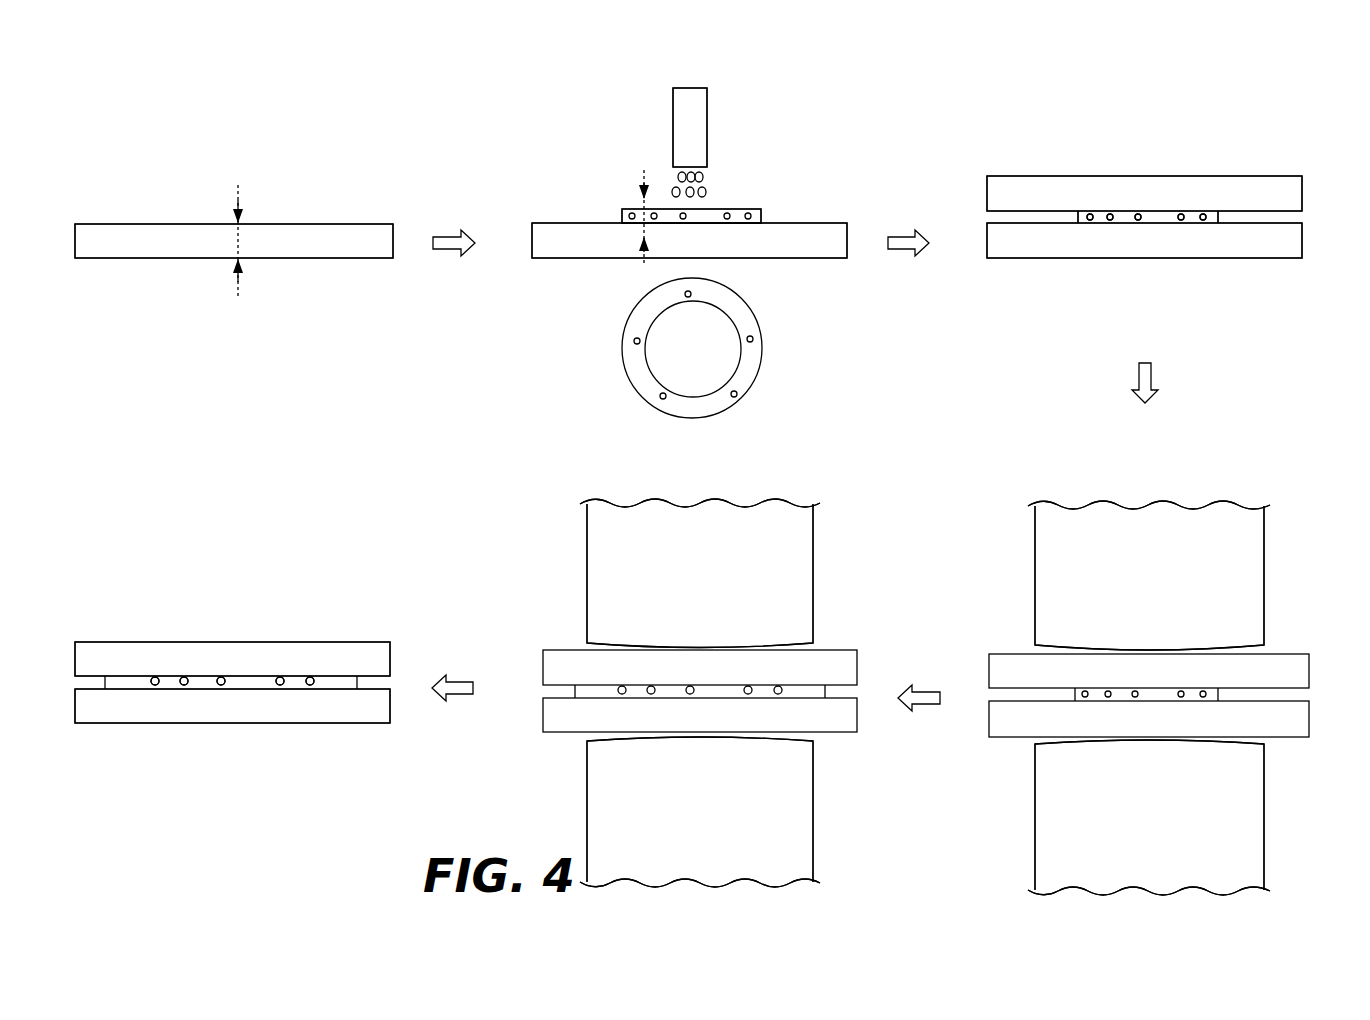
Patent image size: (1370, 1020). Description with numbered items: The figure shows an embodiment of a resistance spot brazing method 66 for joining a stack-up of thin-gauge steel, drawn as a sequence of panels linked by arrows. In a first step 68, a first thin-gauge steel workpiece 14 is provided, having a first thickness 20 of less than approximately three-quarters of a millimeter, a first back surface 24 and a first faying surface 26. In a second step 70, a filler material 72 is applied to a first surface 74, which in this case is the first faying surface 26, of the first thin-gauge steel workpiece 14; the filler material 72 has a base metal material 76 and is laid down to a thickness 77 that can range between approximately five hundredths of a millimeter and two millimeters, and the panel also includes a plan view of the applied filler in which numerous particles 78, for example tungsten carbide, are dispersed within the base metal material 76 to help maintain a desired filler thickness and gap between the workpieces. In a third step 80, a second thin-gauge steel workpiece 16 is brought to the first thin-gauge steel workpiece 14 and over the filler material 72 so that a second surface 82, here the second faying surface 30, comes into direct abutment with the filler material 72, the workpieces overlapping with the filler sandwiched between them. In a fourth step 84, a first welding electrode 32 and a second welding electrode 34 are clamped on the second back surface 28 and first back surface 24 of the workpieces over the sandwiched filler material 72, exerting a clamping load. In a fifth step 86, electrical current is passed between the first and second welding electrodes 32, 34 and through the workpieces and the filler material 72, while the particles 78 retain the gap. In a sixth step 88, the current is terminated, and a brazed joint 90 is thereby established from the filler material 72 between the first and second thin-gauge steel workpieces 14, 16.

The first thin-gauge steel workpiece 14 is at (167, 240).
The second thin-gauge steel workpiece 16 is at (1020, 192).
The first thickness 20 is at (240, 240).
The first back surface 24 is at (1012, 739).
The first faying surface 26 is at (689, 142).
The second back surface 28 is at (1012, 652).
The second faying surface 30 is at (1223, 212).
The first welding electrode 32 is at (1264, 571).
The second welding electrode 34 is at (1264, 813).
The resistance spot brazing method 66 is at (1214, 78).
The first step 68 is at (356, 198).
The second step 70 is at (836, 197).
The filler material 72 is at (714, 217).
The first surface 74 is at (629, 155).
The base metal material 76 is at (762, 218).
The thickness 77 is at (645, 178).
The particles 78 is at (656, 219).
The third step 80 is at (1284, 156).
The second surface 82 is at (1175, 168).
The fourth step 84 is at (1278, 524).
The fifth step 86 is at (834, 537).
The sixth step 88 is at (369, 615).
The brazed joint 90 is at (208, 702).